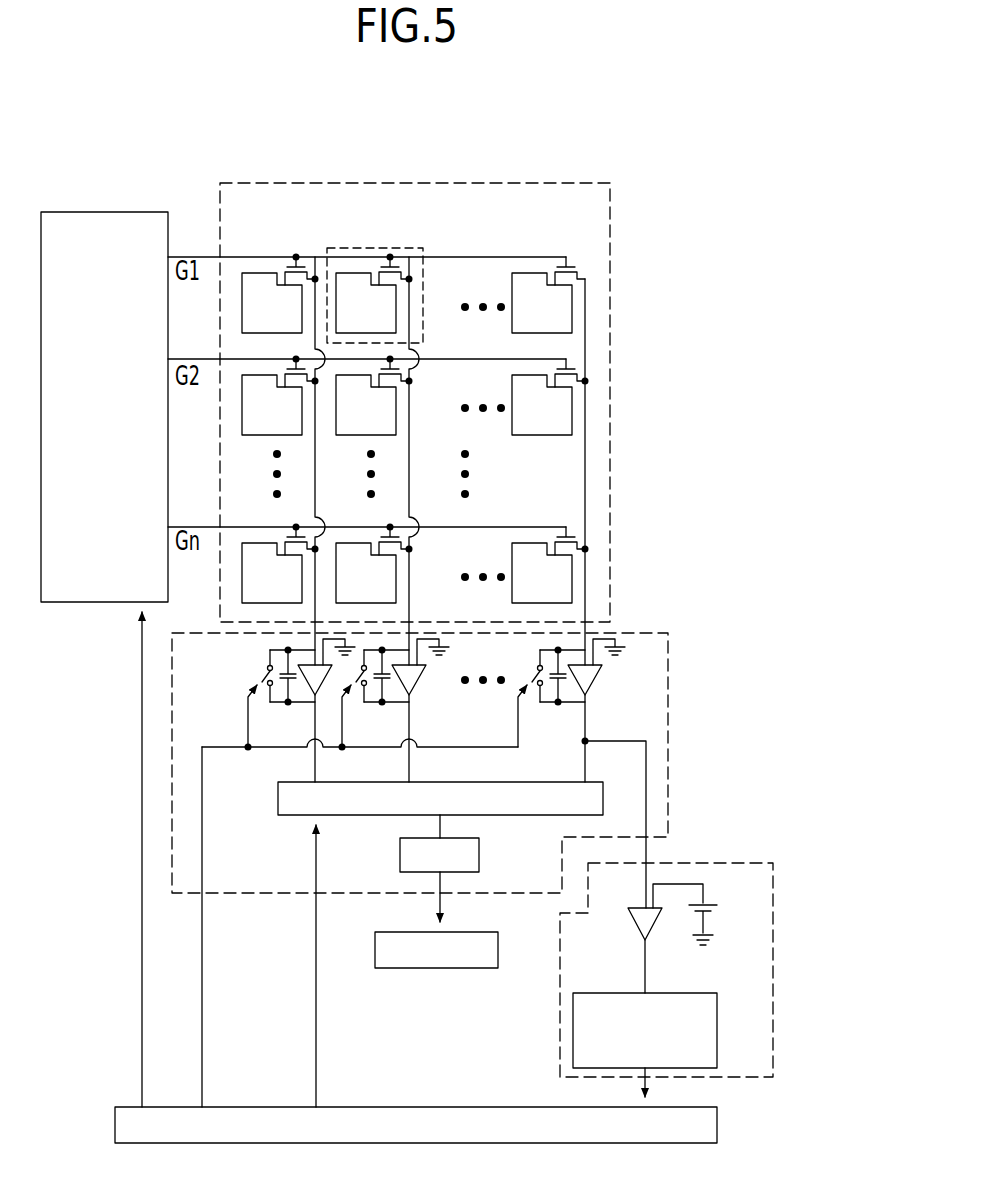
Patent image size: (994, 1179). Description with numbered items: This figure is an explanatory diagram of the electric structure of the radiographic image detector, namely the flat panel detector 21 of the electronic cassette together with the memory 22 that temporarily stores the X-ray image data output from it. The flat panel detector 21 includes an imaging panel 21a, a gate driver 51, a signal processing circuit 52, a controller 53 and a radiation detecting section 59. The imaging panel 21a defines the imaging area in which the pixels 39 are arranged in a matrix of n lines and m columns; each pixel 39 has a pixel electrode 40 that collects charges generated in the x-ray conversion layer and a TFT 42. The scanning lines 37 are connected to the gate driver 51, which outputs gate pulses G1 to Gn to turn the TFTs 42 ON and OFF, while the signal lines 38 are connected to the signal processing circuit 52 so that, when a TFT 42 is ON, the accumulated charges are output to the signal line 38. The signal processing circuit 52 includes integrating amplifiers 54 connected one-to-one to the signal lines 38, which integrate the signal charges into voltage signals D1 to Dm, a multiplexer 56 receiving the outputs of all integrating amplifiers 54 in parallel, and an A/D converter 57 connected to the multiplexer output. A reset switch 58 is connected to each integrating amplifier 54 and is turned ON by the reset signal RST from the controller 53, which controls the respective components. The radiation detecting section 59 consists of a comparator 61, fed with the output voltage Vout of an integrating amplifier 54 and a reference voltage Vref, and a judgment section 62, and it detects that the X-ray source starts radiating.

The flat panel detector 21 is at (297, 157).
The imaging panel 21a is at (558, 183).
The memory 22 is at (498, 950).
The scanning line 37 is at (267, 257).
The signal line 38 is at (409, 468).
The pixel 39 is at (376, 248).
The pixel electrode 40 is at (353, 273).
The TFT 42 is at (405, 255).
The gate driver 51 is at (90, 212).
The signal processing circuit 52 is at (653, 633).
The controller 53 is at (380, 1107).
The integrating amplifier 54 is at (256, 651).
The multiplexer 56 is at (278, 800).
The A/D converter 57 is at (479, 855).
The reset switch 58 is at (264, 671).
The radiation detecting section 59 is at (703, 863).
The comparator 61 is at (623, 922).
The judgment section 62 is at (717, 1010).